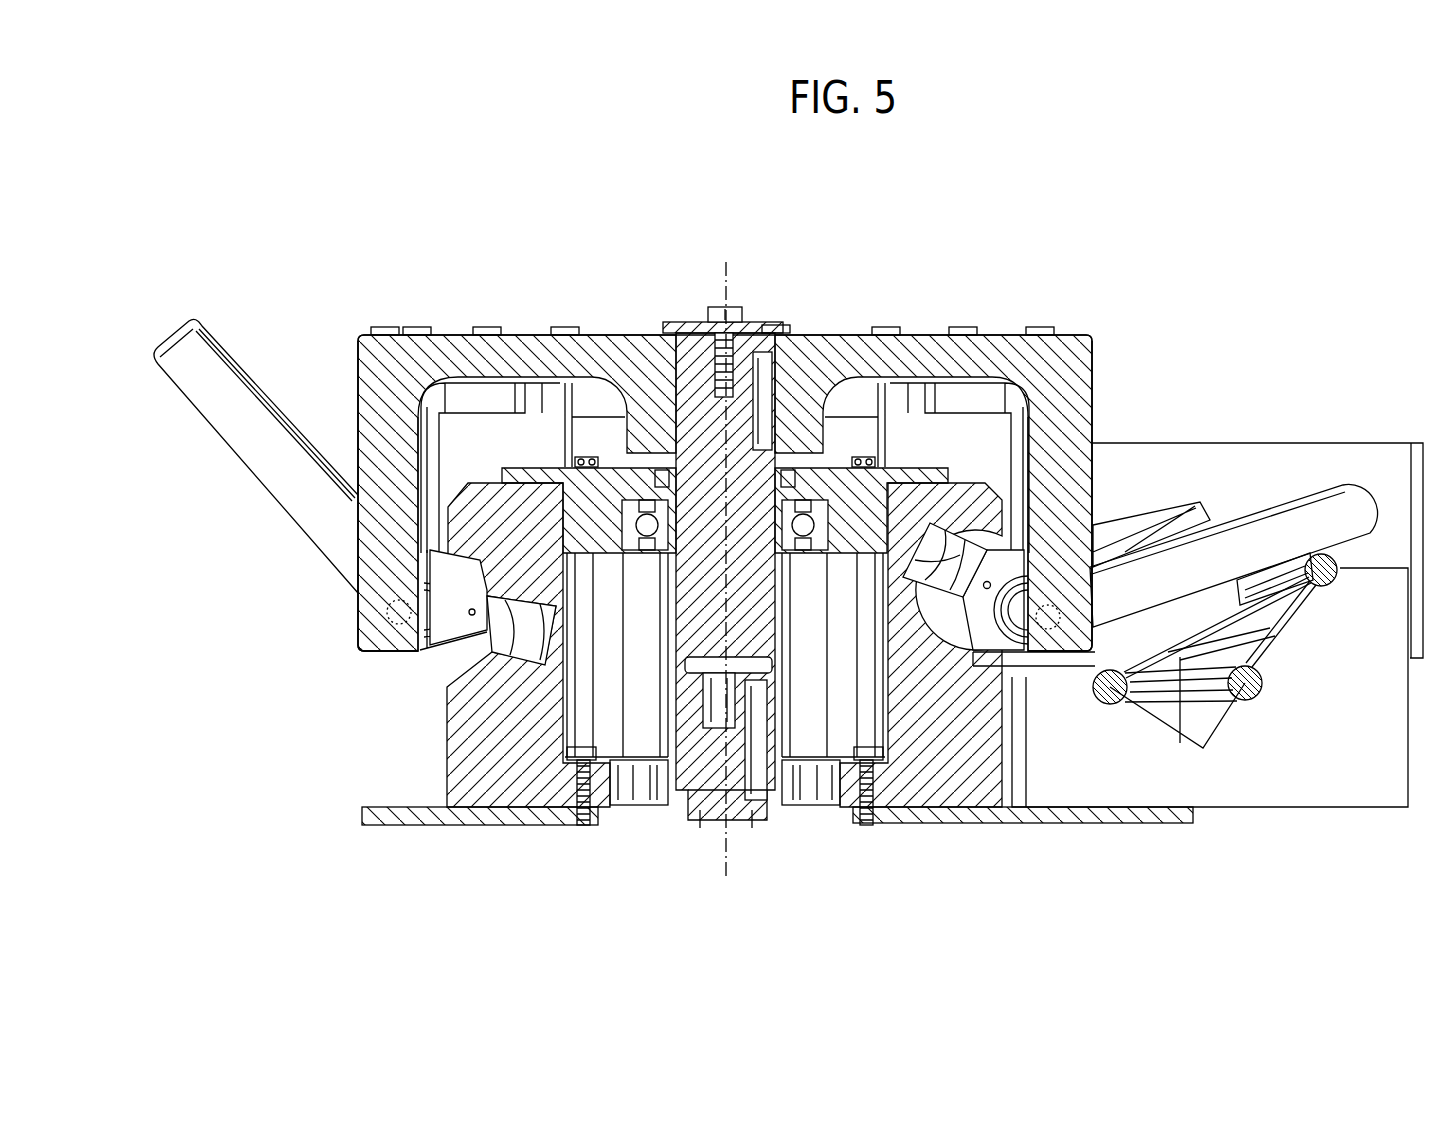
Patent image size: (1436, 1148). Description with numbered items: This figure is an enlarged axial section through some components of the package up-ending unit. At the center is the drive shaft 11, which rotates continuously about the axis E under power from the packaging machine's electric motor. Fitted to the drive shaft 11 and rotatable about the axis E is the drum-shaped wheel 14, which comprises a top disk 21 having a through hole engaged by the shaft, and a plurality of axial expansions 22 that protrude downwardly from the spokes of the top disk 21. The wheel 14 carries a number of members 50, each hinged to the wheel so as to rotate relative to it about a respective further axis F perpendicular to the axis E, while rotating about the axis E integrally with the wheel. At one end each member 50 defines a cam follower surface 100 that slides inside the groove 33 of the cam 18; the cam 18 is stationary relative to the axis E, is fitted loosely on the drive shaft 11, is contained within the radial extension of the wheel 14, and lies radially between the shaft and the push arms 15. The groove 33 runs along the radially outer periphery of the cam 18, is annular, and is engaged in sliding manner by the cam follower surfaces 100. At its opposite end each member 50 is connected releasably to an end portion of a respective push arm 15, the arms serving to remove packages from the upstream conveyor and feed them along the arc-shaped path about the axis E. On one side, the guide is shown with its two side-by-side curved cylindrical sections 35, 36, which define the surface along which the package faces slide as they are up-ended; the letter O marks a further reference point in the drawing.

The drive shaft 11 is at (677, 781).
The wheel 14 is at (1055, 414).
The push arm 15 is at (232, 410).
The cam 18 is at (915, 750).
The top disk 21 is at (601, 350).
The axial expansion 22 is at (372, 622).
The groove 33 is at (973, 392).
The curved cylindrical section 35 is at (1250, 700).
The curved cylindrical section 36 is at (1325, 588).
The member 50 is at (428, 652).
The cam follower surface 100 is at (513, 628).
The axis E is at (727, 282).
The further axis F is at (386, 612).
The pivot point O is at (1378, 617).